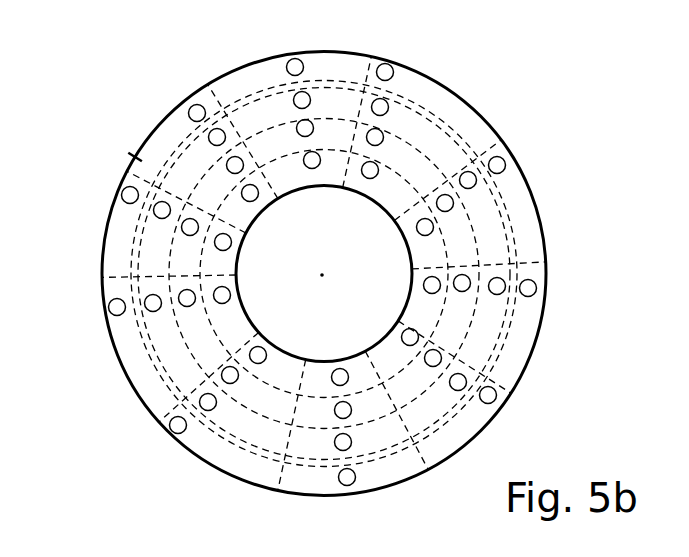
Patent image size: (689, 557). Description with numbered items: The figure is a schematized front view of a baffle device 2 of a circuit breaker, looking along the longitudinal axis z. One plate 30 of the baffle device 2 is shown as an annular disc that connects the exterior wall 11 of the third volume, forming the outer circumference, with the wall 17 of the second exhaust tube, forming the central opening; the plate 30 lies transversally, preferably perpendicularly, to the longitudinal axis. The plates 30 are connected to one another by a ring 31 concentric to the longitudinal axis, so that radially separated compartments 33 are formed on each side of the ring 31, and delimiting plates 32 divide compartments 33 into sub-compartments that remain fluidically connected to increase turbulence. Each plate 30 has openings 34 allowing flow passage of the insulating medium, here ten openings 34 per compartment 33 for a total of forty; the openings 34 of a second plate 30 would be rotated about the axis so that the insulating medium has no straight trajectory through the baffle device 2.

The baffle device 2 is at (90, 180).
The exterior wall 11 is at (359, 274).
The wall 17 is at (348, 186).
The plate 30 is at (132, 155).
The ring 31 is at (432, 118).
The delimiting plate 32 is at (465, 135).
The compartment 33 is at (322, 100).
The opening 34 is at (506, 163).